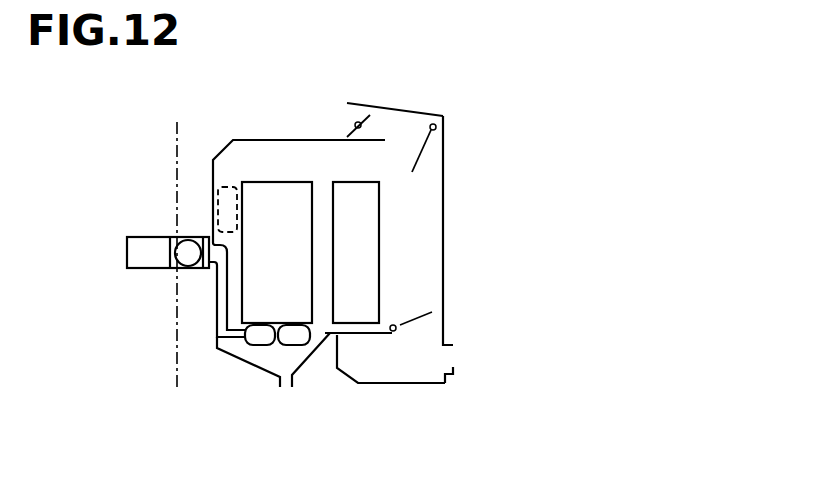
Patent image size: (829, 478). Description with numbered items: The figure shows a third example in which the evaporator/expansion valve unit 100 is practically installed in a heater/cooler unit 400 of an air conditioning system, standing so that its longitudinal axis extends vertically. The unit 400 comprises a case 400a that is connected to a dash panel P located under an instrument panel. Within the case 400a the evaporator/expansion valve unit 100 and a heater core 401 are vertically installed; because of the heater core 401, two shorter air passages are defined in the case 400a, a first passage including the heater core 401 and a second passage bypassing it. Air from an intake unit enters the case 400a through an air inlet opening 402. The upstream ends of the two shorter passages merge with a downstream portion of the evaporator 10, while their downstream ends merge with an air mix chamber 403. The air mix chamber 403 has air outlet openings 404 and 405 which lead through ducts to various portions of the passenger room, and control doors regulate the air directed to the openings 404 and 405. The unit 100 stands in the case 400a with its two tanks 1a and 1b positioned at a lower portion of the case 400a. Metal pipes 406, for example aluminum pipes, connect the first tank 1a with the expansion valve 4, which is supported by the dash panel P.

The heater/cooler unit 400 is at (615, 115).
The case 400a is at (415, 383).
The heater core 401 is at (360, 324).
The air inlet opening 402 is at (222, 212).
The air mix chamber 403 is at (430, 228).
The air outlet opening 404 is at (349, 104).
The air outlet opening 405 is at (452, 367).
The metal pipes 406 is at (216, 336).
The expansion valve 4 is at (170, 257).
The evaporator 10 is at (310, 197).
The evaporator/expansion valve unit 100 is at (268, 172).
The first tank 1a is at (260, 347).
The second tank 1b is at (302, 347).
The dash panel P is at (173, 178).